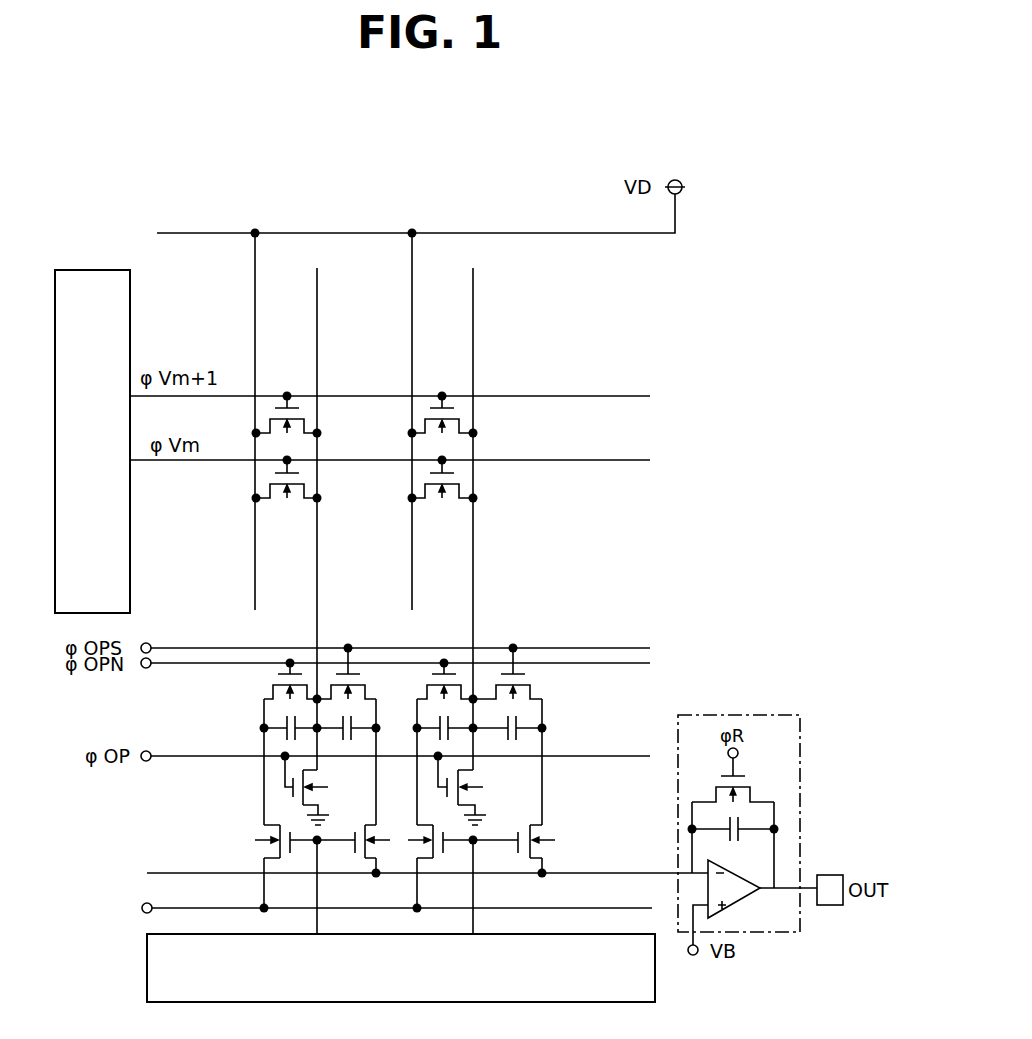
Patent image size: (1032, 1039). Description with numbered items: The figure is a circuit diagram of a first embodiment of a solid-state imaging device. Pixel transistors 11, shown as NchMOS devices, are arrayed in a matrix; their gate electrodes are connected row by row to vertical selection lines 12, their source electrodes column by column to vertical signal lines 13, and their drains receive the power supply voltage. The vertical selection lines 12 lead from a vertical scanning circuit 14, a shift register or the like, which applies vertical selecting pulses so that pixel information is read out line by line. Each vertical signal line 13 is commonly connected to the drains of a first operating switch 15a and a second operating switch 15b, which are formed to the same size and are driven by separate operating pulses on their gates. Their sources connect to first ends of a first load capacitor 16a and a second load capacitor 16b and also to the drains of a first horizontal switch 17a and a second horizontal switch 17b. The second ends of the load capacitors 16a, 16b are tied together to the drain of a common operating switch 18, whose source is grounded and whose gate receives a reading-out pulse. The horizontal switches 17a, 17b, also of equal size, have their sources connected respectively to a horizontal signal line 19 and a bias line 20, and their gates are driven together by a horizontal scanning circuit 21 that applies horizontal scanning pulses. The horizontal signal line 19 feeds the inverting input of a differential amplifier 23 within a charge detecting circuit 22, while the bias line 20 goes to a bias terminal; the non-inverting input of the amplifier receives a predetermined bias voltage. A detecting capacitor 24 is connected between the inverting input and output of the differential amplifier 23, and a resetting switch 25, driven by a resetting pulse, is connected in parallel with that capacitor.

The pixel transistor 11 is at (447, 428).
The vertical selection line 12 is at (528, 395).
The vertical signal line 13 is at (473, 527).
The vertical scanning circuit 14 is at (78, 270).
The first operating switch 15a is at (522, 689).
The second operating switch 15b is at (437, 691).
The first load capacitor 16a is at (522, 718).
The second load capacitor 16b is at (433, 725).
The first horizontal switch 17a is at (542, 832).
The second horizontal switch 17b is at (422, 848).
The common operating switch 18 is at (473, 775).
The horizontal signal line 19 is at (177, 872).
The bias line 20 is at (170, 912).
The horizontal scanning circuit 21 is at (655, 975).
The charge detecting circuit 22 is at (735, 713).
The differential amplifier 23 is at (732, 888).
The detecting capacitor 24 is at (733, 843).
The resetting switch 25 is at (742, 797).